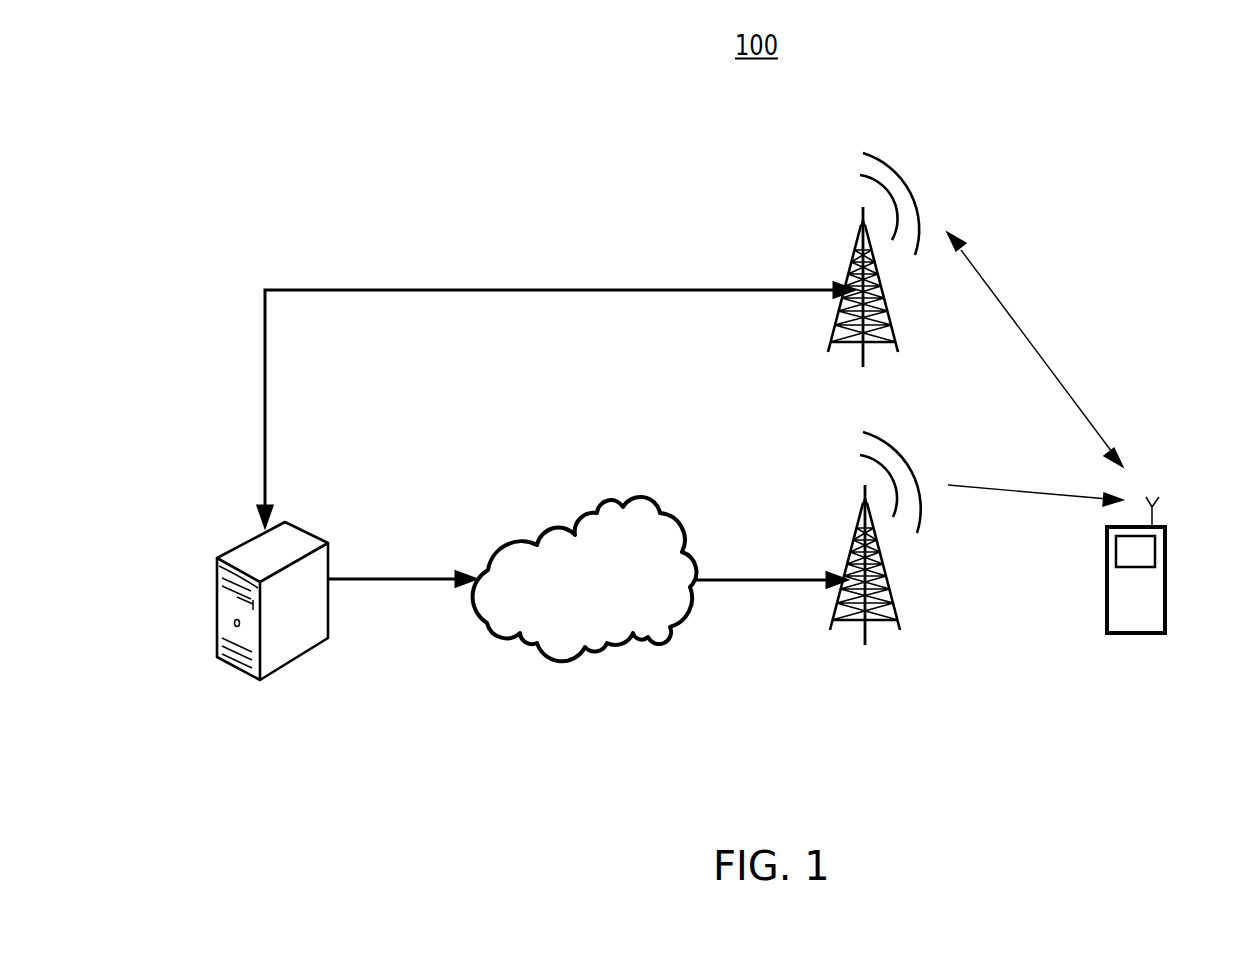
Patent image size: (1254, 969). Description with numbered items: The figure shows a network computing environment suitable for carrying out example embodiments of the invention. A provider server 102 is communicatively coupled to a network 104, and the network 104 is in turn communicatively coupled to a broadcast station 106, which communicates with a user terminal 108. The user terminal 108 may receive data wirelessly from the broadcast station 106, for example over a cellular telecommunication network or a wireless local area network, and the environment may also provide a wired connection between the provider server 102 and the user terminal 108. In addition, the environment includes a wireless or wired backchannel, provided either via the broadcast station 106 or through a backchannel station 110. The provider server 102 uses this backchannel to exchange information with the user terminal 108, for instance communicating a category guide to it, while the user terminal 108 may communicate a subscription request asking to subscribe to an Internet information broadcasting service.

The provider server 102 is at (320, 523).
The network 104 is at (702, 536).
The broadcast station 106 is at (917, 616).
The user terminal 108 is at (1172, 584).
The backchannel station 110 is at (907, 341).